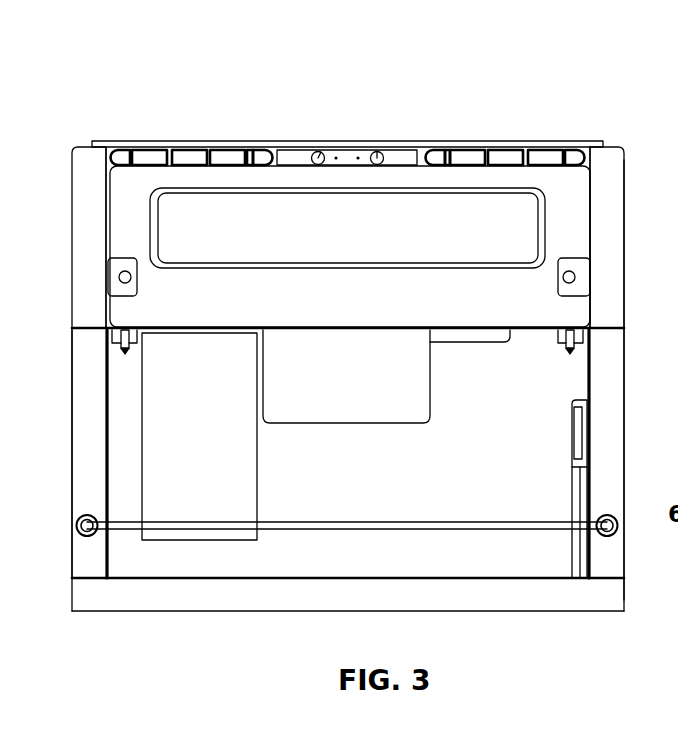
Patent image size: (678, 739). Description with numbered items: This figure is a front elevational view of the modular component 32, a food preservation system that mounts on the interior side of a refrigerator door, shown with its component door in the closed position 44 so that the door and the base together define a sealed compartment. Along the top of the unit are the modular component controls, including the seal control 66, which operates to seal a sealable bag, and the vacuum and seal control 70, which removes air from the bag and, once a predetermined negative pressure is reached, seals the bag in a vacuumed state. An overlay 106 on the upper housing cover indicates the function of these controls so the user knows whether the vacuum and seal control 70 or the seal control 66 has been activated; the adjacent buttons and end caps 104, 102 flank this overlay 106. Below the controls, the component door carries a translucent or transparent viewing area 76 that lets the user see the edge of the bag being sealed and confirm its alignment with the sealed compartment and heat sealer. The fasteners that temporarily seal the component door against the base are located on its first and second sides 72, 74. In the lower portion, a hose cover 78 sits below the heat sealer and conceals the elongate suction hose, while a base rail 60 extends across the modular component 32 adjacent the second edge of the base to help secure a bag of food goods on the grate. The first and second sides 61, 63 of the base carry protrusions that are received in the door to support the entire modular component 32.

The modular component 32 is at (108, 108).
The closed position 44 is at (636, 218).
The end caps 102 is at (122, 150).
The buttons 104 is at (232, 155).
The vacuum and seal control 70 is at (321, 151).
The overlay 106 is at (345, 152).
The seal control 66 is at (378, 149).
The second side of the component door 74 is at (138, 208).
The first side of the component door 72 is at (572, 208).
The viewing area 76 is at (340, 233).
The hose cover 78 is at (207, 424).
The first side of the base 61 is at (80, 382).
The second side of the base 63 is at (606, 445).
The base rail 60 is at (343, 520).